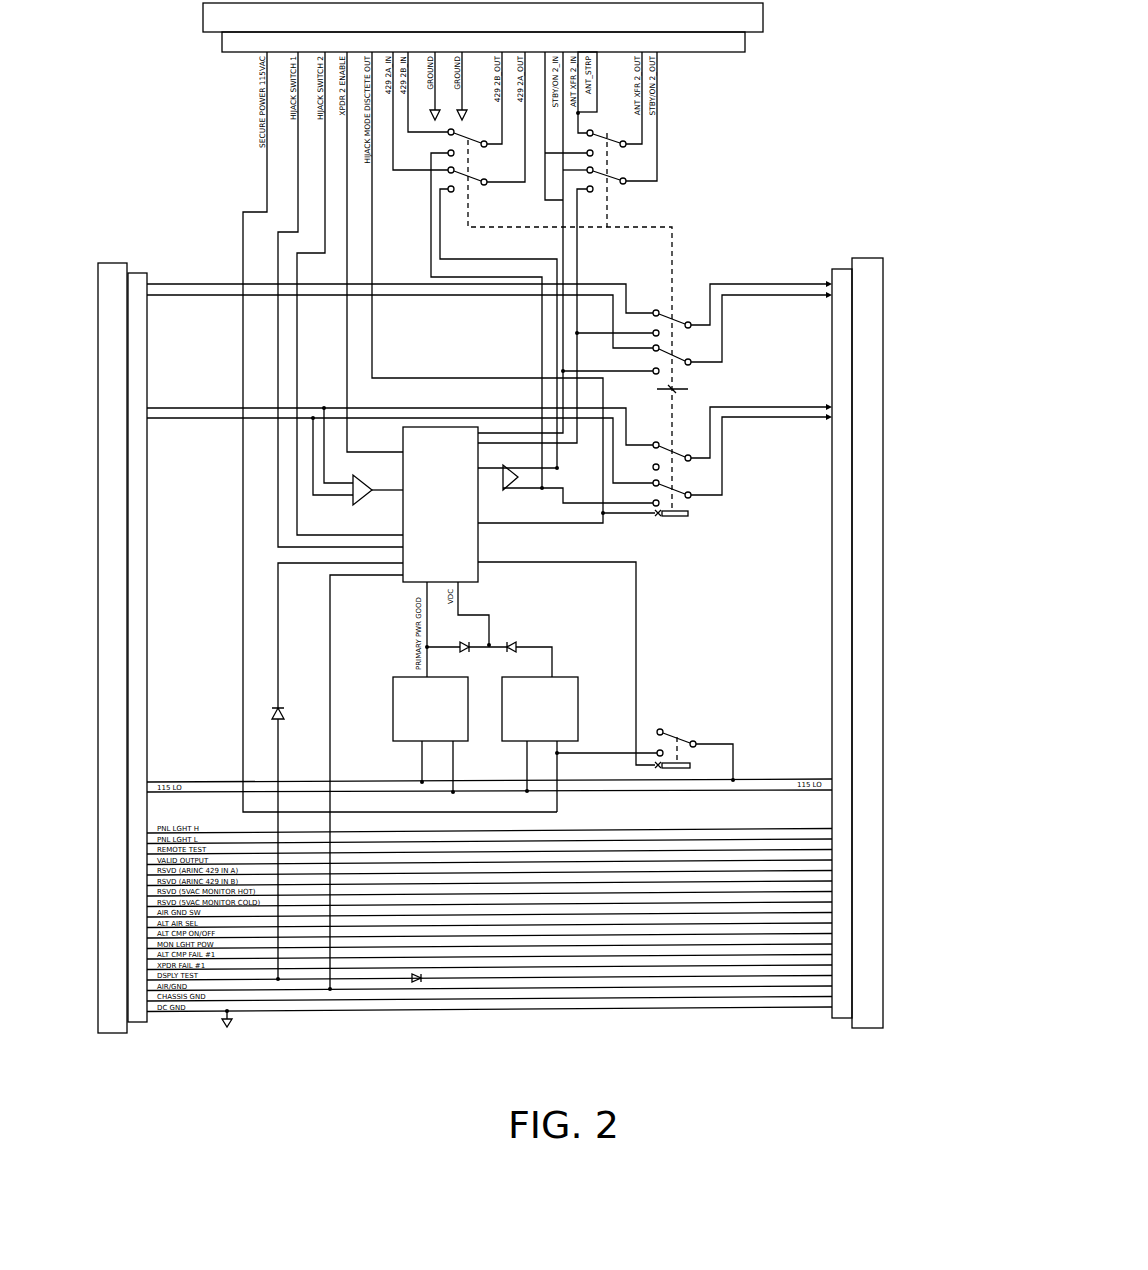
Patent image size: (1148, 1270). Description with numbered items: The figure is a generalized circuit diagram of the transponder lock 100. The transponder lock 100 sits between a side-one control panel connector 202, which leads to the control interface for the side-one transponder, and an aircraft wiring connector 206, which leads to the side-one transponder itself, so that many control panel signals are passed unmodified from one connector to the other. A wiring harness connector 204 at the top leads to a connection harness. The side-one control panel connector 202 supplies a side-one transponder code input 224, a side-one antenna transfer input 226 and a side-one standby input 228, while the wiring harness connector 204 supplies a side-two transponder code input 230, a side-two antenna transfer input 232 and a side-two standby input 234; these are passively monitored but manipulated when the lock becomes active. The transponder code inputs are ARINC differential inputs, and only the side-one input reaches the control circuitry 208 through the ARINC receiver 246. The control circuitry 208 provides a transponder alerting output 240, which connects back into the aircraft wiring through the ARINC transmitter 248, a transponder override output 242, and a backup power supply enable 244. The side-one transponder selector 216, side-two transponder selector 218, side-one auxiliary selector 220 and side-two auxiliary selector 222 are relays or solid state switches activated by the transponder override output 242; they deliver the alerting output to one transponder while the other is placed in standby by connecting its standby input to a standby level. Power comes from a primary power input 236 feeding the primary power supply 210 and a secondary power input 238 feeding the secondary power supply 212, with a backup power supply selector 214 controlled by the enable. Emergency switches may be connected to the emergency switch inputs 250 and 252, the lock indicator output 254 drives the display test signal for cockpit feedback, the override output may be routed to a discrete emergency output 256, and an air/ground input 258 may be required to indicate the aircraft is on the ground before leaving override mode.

The transponder lock 100 is at (157, 98).
The side-1 control panel connector 202 is at (115, 1035).
The wiring harness connector 204 is at (763, 10).
The aircraft wiring connector 206 is at (868, 1030).
The control circuitry 208 is at (440, 504).
The primary power supply 210 is at (430, 735).
The secondary power supply 212 is at (579, 744).
The backup power supply selector 214 is at (706, 728).
The side-1 transponder selector 216 is at (707, 511).
The side-2 transponder selector 218 is at (418, 177).
The side-1 auxiliary selector 220 is at (697, 277).
The side-2 auxiliary selector 222 is at (656, 187).
The side-1 transponder code input 224 is at (222, 421).
The side-1 antenna transfer input 226 is at (225, 282).
The side-1 standby input 228 is at (225, 299).
The side-2 transponder code input 230 is at (408, 131).
The side-2 antenna transfer input 232 is at (579, 117).
The side-2 standby input 234 is at (560, 110).
The primary power input 236 is at (757, 778).
The secondary power input 238 is at (244, 691).
The transponder alerting output 240 is at (488, 478).
The transponder override output 242 is at (592, 525).
The backup power supply enable 244 is at (636, 625).
The ARINC-429 receiver 246 is at (363, 501).
The ARINC-429 transmitter 248 is at (508, 452).
The emergency switch input 250 is at (295, 182).
The emergency switch input 252 is at (323, 158).
The lock indicator output 254 is at (280, 633).
The discrete emergency output 256 is at (373, 322).
The air/ground input 258 is at (330, 697).